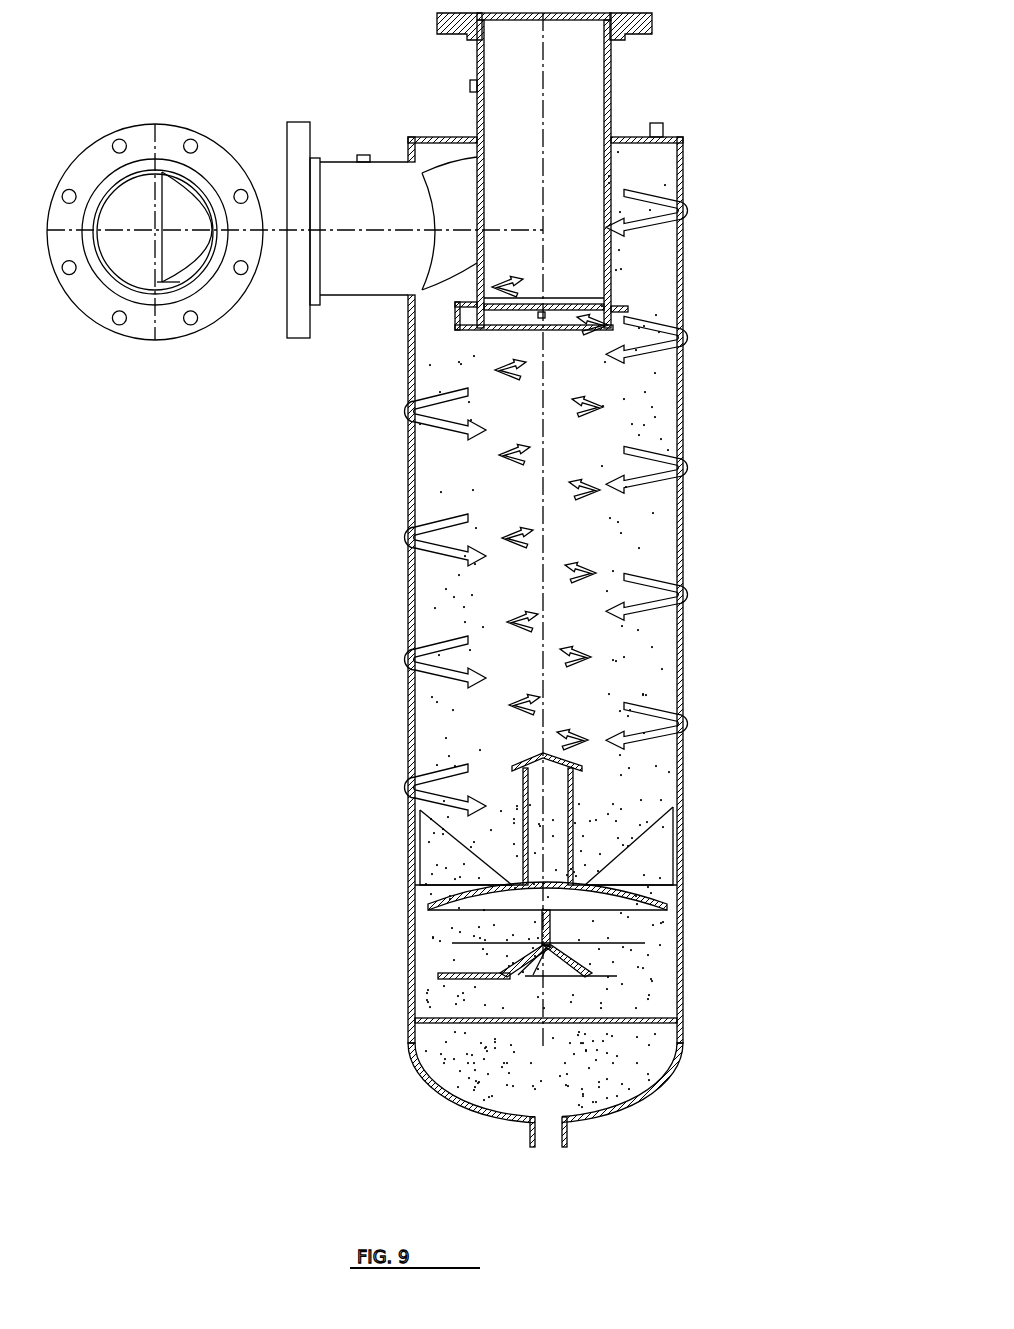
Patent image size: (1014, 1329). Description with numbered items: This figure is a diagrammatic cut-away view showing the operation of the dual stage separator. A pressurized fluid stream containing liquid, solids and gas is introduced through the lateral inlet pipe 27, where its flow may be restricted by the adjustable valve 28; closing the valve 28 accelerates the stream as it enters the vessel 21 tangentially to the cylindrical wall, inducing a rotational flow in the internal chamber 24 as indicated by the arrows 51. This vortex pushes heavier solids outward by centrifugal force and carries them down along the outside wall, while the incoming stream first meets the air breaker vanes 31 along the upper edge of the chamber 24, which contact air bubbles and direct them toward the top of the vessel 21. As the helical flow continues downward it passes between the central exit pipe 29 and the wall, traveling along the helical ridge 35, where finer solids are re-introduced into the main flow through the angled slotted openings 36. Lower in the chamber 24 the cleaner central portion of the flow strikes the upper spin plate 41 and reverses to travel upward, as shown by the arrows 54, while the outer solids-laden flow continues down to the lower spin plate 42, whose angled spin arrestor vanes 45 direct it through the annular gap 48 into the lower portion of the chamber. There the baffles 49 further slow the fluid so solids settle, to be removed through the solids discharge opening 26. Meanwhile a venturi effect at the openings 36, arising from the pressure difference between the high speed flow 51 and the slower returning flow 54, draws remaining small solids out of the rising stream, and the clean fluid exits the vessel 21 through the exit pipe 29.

The vessel 21 is at (415, 623).
The internal chamber 24 is at (600, 517).
The solids discharge opening 26 is at (567, 1135).
The inlet pipe 27 is at (342, 182).
The valve 28 is at (187, 200).
The exit pipe 29 is at (612, 78).
The air breaker vanes 31 is at (457, 157).
The helical ridge 35 is at (618, 304).
The slotted openings 36 is at (543, 315).
The upper spin plate 41 is at (525, 768).
The lower spin plate 42 is at (617, 902).
The spin arrestor vanes 45 is at (670, 855).
The annular gap 48 is at (420, 890).
The baffles 49 is at (477, 958).
The rotational flow arrows 51 is at (663, 223).
The upward flow arrows 54 is at (508, 277).